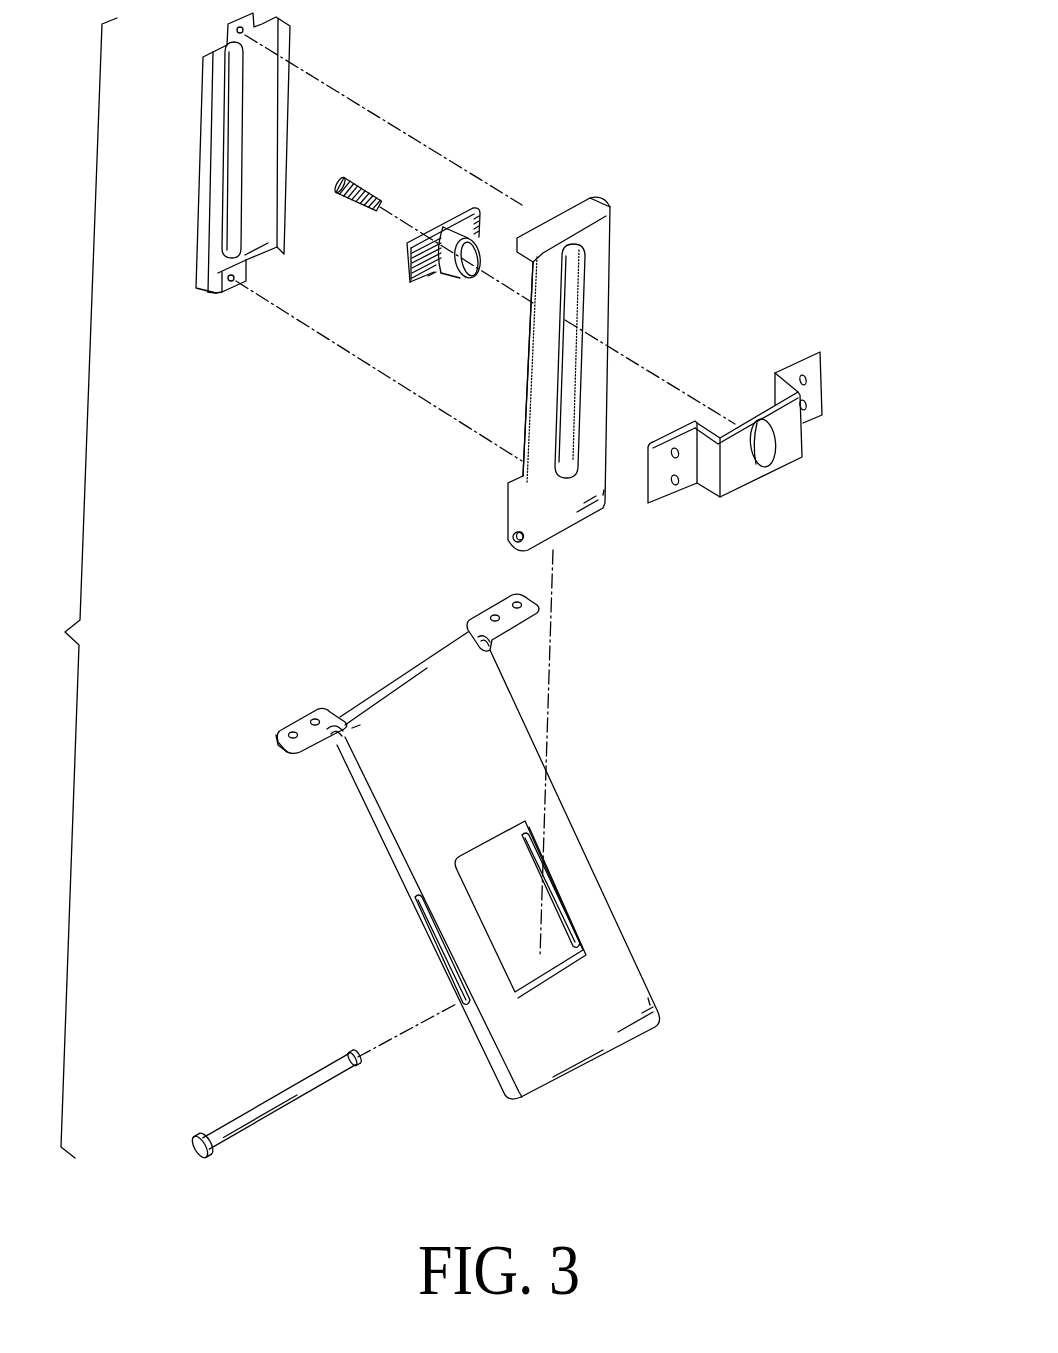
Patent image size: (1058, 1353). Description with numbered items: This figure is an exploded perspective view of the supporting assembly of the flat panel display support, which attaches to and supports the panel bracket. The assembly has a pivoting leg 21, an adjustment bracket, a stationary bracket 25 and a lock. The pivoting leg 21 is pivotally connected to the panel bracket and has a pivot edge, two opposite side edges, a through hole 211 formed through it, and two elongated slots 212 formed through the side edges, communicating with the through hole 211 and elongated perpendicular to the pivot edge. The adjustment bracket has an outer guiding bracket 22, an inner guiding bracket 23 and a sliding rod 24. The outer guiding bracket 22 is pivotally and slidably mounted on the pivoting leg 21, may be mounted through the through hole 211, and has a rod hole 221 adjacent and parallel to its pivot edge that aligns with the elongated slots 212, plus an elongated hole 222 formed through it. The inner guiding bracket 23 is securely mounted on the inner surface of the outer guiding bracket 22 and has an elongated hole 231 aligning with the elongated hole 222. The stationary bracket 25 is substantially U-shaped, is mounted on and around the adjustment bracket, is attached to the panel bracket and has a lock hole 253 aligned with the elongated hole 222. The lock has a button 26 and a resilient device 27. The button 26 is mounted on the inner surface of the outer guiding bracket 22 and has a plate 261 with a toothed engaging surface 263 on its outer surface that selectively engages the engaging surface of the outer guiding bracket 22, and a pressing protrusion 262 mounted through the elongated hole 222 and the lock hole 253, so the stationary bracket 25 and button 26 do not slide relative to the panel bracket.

The pivoting leg 21 is at (491, 851).
The through hole 211 is at (477, 868).
The elongated slots 212 is at (430, 923).
The outer guiding bracket 22 is at (546, 387).
The rod hole 221 is at (513, 538).
The elongated hole 222 is at (583, 302).
The inner guiding bracket 23 is at (202, 228).
The elongated hole 231 is at (235, 107).
The sliding rod 24 is at (273, 1105).
The stationary bracket 25 is at (777, 455).
The lock hole 253 is at (763, 437).
The button 26 is at (460, 262).
The plate 261 is at (408, 266).
The pressing protrusion 262 is at (475, 249).
The engaging surface 263 is at (430, 278).
The resilient device 27 is at (374, 177).